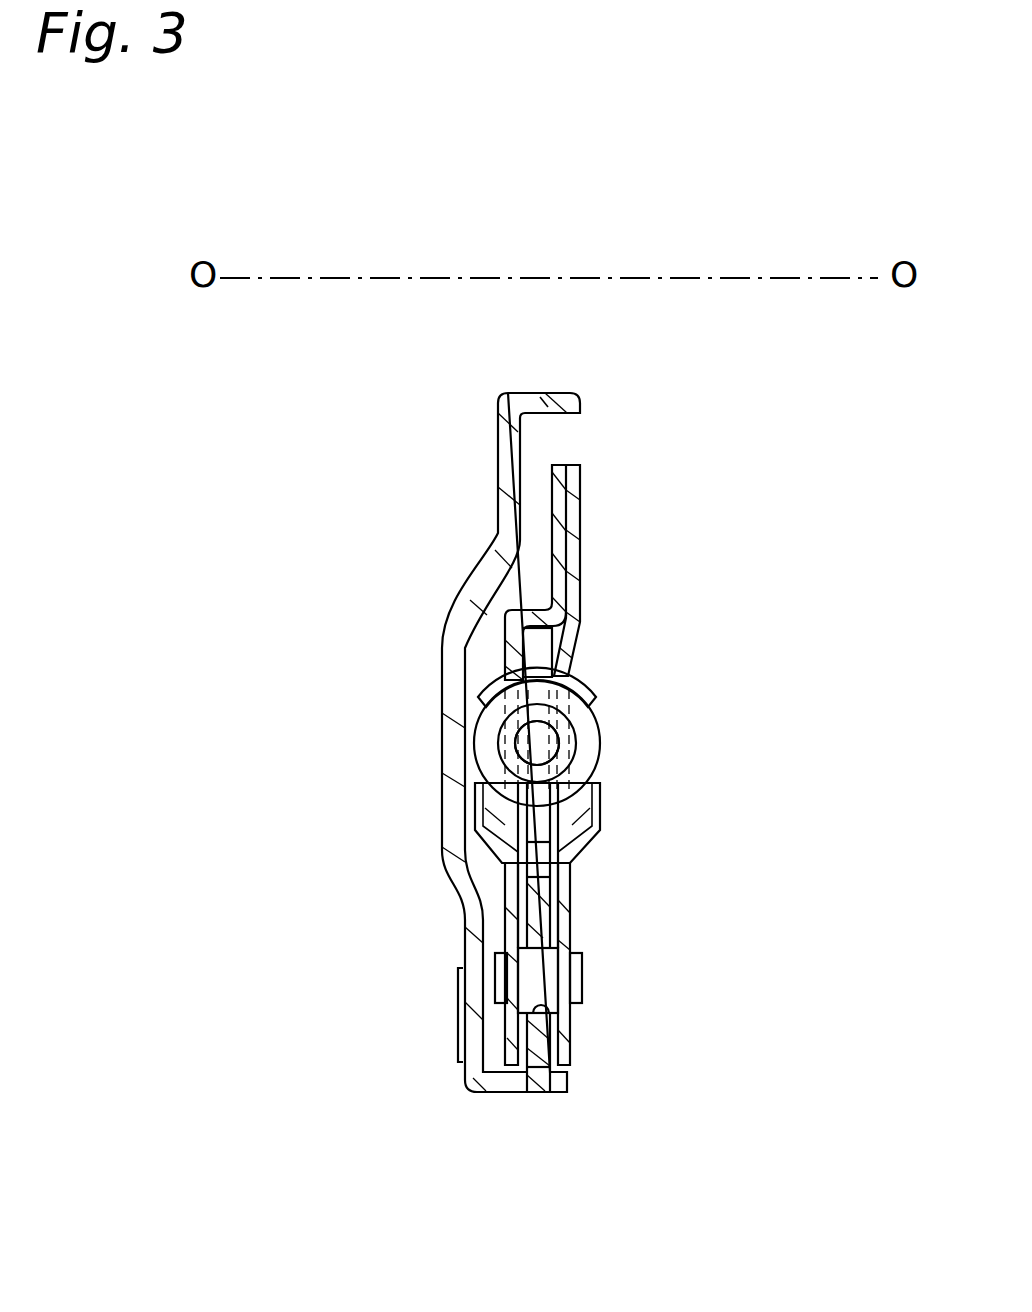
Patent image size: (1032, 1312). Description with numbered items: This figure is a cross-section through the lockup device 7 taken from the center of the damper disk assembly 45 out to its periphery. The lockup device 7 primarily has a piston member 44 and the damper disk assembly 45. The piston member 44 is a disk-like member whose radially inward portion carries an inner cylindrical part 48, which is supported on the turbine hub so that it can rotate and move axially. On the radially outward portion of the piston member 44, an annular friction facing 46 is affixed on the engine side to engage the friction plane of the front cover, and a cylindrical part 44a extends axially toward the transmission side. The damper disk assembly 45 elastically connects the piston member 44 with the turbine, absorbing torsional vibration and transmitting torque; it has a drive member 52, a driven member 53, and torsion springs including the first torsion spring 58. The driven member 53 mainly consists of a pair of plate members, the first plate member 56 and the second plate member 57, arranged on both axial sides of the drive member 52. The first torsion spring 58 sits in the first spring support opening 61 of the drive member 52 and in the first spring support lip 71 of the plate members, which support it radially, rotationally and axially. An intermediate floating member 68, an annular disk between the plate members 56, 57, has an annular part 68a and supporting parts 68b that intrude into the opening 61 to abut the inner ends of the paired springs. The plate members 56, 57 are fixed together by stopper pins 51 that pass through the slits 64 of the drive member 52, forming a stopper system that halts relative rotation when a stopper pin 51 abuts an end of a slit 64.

The lockup device 7 is at (668, 503).
The piston member 44 is at (443, 795).
The cylindrical part 44a is at (508, 1093).
The damper disk assembly 45 is at (653, 754).
The friction facing 46 is at (457, 1017).
The inner cylindrical part 48 is at (545, 395).
The stopper pin 51 is at (545, 982).
The drive member 52 is at (533, 925).
The driven member 53 is at (700, 870).
The first plate member 56 is at (515, 867).
The second plate member 57 is at (563, 923).
The first torsion spring 58 is at (588, 735).
The first spring support opening 61 is at (543, 830).
The stopper slit 64 is at (557, 1010).
The intermediate floating member 68 is at (264, 637).
The annular part 68a is at (538, 673).
The supporting part 68b is at (537, 743).
The first spring support lip 71 is at (580, 690).